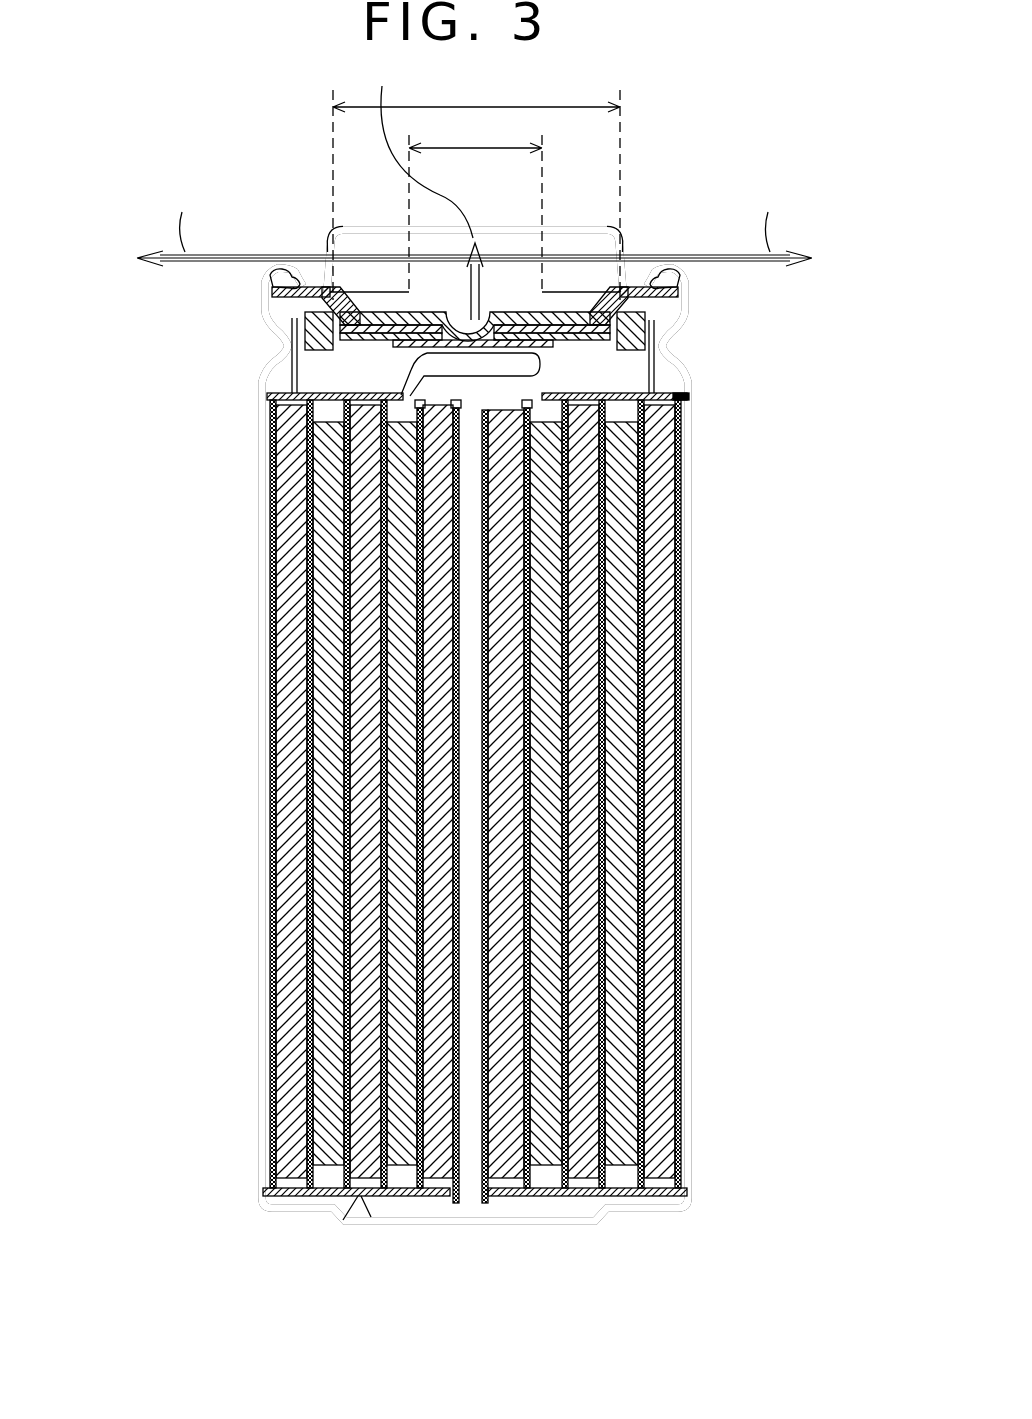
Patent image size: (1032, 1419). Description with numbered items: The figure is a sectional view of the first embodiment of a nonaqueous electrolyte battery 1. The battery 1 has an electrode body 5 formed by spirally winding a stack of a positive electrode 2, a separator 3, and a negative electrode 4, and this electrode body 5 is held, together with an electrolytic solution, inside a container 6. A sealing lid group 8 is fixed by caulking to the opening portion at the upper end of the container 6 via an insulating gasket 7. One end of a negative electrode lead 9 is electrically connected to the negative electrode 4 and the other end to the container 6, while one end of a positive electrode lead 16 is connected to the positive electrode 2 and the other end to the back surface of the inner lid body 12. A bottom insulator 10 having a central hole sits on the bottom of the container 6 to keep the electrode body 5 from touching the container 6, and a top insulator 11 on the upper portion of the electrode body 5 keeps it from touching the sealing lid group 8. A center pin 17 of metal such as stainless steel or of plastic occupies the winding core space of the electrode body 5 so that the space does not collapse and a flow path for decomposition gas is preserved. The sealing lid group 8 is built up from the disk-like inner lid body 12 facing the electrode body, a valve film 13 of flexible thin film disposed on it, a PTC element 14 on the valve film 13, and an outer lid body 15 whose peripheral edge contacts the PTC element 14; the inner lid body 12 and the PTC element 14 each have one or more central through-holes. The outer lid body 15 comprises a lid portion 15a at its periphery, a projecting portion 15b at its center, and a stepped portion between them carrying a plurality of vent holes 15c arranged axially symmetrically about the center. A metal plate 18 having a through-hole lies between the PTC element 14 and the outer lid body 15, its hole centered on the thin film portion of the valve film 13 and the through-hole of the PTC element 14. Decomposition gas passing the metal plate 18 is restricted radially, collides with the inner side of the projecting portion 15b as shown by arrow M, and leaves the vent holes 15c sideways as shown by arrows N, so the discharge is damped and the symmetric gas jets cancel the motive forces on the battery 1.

The nonaqueous electrolyte battery 1 is at (703, 194).
The positive electrode 2 is at (632, 680).
The separator 3 is at (745, 612).
The negative electrode 4 is at (658, 640).
The electrode body 5 is at (526, 794).
The container 6 is at (690, 940).
The insulating gasket 7 is at (262, 282).
The sealing lid group 8 is at (350, 214).
The negative electrode lead 9 is at (352, 1222).
The bottom insulator 10 is at (676, 1197).
The top insulator 11 is at (688, 400).
The inner lid body 12 is at (662, 348).
The valve film 13 is at (421, 308).
The PTC element 14 is at (688, 296).
The outer lid body 15 is at (508, 226).
The lid portion 15a is at (312, 285).
The projecting portion 15b is at (573, 227).
The vent holes 15c is at (325, 236).
The positive electrode lead 16 is at (540, 365).
The center pin 17 is at (485, 1204).
The metal plate 18 is at (383, 291).